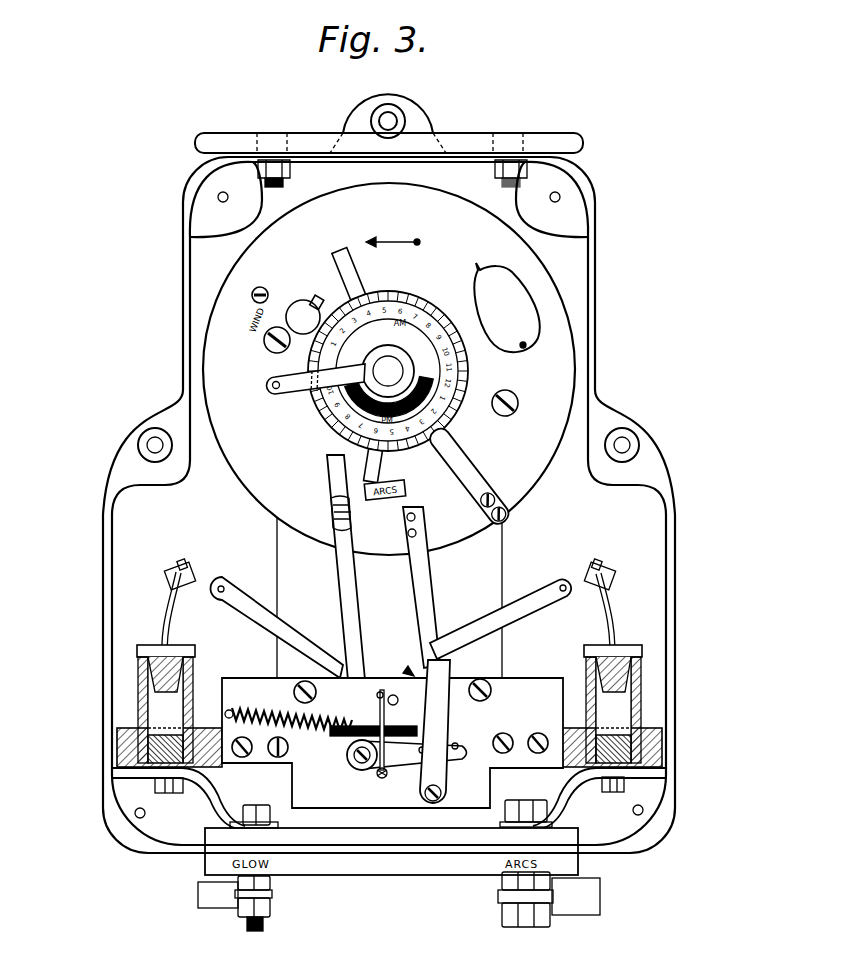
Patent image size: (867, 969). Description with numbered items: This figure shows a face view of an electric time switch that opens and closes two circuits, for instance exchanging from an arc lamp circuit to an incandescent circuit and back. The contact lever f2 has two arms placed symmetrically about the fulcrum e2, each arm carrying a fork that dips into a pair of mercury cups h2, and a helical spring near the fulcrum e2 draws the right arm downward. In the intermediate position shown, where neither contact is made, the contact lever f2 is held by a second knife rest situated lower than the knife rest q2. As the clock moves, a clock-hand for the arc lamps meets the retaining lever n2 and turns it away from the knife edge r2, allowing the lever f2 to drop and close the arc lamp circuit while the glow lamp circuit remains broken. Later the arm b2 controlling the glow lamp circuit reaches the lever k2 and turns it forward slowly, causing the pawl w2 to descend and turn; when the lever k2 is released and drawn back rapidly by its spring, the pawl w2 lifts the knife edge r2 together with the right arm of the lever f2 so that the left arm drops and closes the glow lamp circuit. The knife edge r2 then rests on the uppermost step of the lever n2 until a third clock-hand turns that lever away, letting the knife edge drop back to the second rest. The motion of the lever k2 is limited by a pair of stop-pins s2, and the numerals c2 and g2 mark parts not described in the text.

The OUT index tab c2 is at (340, 263).
The arm b2 is at (282, 398).
The lever k2 is at (330, 481).
The stop-pins s2 is at (447, 447).
The contact lever f2 is at (253, 600).
The mercury cups h2 is at (195, 668).
The retaining lever n2 is at (423, 577).
The knife edge r2 is at (408, 668).
The knife rest q2 is at (417, 668).
The fulcrum e2 is at (378, 688).
The pin g2 is at (393, 700).
The pawl w2 is at (470, 715).